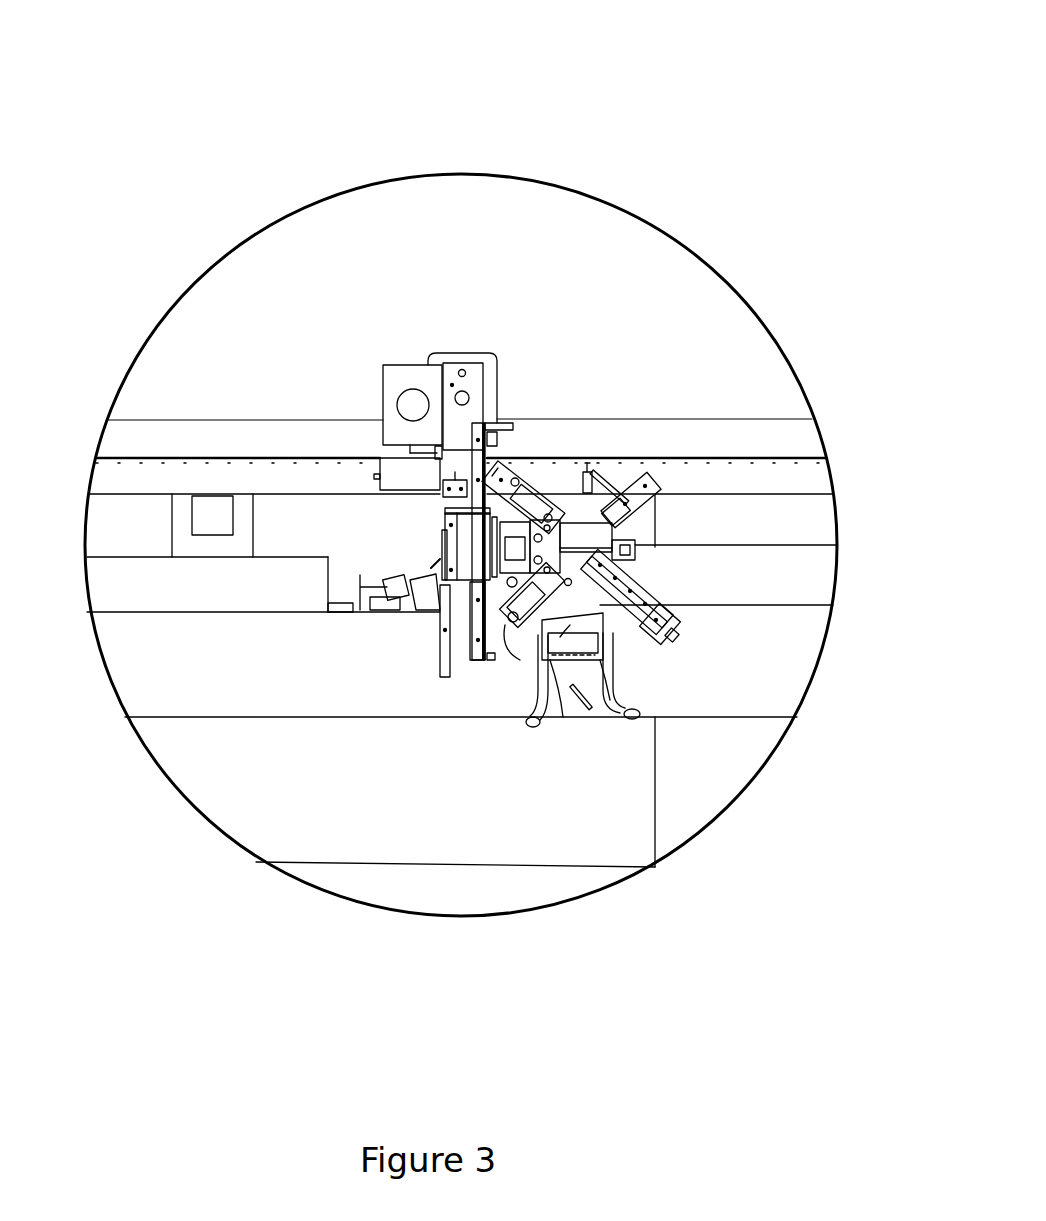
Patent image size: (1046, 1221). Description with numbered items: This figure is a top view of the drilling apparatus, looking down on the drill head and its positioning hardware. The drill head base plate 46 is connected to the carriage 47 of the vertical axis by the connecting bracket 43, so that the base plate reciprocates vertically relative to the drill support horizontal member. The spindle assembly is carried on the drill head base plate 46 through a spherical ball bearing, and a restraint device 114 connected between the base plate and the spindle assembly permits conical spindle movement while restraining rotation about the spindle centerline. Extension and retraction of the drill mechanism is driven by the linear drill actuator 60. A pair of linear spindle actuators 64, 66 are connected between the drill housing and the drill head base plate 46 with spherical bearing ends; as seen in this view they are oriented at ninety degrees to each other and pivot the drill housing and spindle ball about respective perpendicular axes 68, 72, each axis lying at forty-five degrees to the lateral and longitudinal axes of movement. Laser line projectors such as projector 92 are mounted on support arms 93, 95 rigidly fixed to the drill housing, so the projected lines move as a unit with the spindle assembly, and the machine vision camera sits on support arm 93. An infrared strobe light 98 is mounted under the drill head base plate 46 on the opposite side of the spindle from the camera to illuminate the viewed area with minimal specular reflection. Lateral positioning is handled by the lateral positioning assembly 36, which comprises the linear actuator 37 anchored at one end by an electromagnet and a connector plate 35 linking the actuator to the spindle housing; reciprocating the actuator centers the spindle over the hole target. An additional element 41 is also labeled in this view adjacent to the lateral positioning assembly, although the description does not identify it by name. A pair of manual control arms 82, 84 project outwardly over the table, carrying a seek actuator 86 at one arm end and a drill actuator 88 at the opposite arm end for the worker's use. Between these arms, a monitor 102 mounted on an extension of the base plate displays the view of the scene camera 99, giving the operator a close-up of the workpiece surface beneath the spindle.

The connector plate 35 is at (455, 508).
The linear actuator 37 is at (447, 466).
The guide rail 41 is at (445, 530).
The lateral positioning assembly 36 is at (432, 536).
The connecting bracket 43 is at (462, 547).
The carriage 47 is at (460, 588).
The linear spindle actuator 66 is at (490, 562).
The drill head base plate 46 is at (518, 630).
The seek actuator 86 is at (535, 722).
The manual control arm 82 is at (550, 722).
The monitor 102 is at (560, 653).
The manual control arm 84 is at (615, 720).
The drill actuator 88 is at (640, 720).
The spindle ball pivot axis 68 is at (667, 630).
The laser line projector 92 is at (603, 625).
The support arm 93 is at (660, 607).
The restraint device 114 is at (627, 537).
The support arm 95 is at (660, 495).
The scene camera 99 is at (611, 470).
The spindle ball pivot axis 72 is at (570, 540).
The drill actuator 60 is at (583, 540).
The linear spindle actuator 64 is at (538, 518).
The infrared strobe light 98 is at (513, 478).